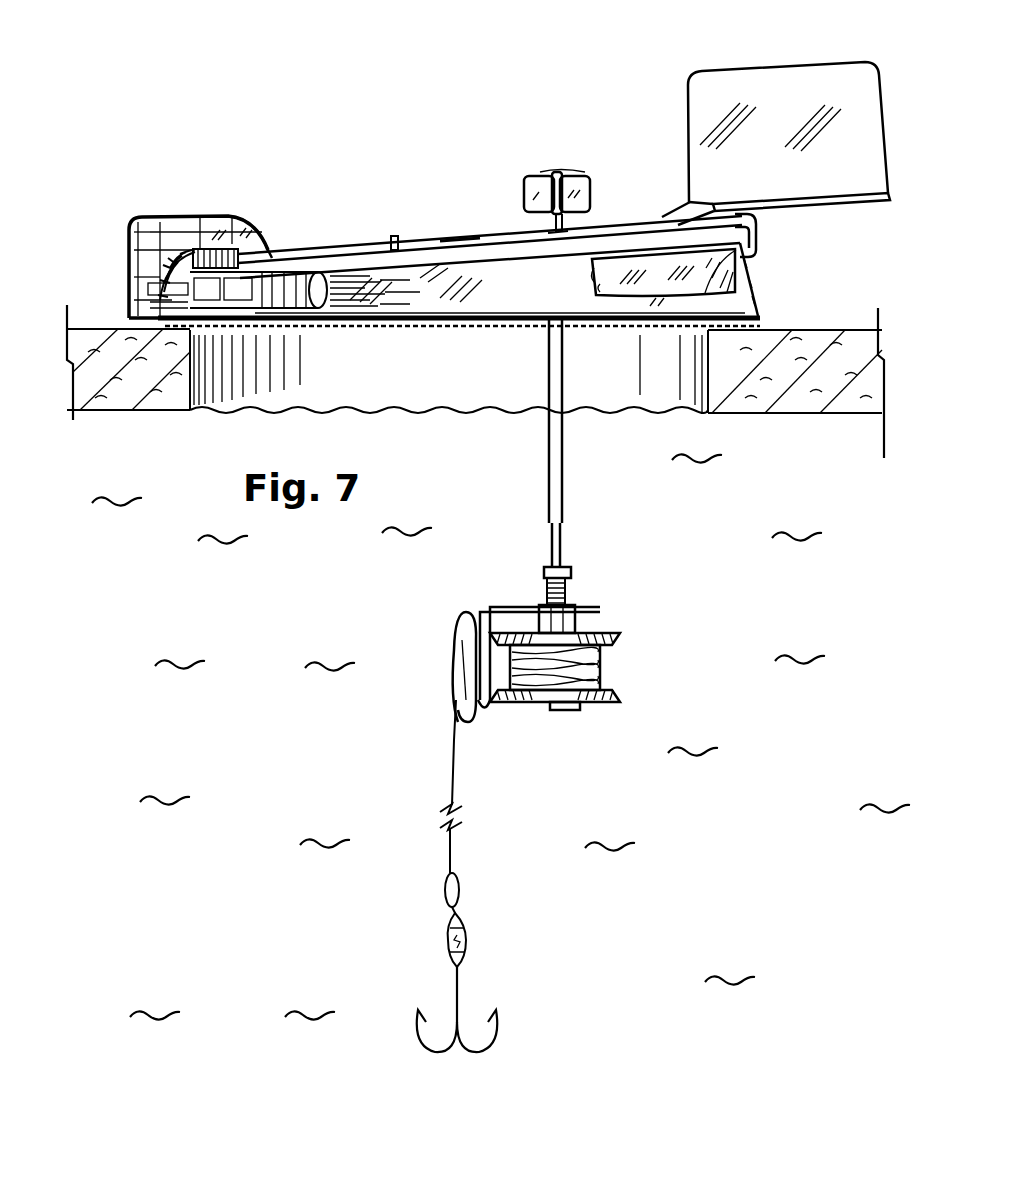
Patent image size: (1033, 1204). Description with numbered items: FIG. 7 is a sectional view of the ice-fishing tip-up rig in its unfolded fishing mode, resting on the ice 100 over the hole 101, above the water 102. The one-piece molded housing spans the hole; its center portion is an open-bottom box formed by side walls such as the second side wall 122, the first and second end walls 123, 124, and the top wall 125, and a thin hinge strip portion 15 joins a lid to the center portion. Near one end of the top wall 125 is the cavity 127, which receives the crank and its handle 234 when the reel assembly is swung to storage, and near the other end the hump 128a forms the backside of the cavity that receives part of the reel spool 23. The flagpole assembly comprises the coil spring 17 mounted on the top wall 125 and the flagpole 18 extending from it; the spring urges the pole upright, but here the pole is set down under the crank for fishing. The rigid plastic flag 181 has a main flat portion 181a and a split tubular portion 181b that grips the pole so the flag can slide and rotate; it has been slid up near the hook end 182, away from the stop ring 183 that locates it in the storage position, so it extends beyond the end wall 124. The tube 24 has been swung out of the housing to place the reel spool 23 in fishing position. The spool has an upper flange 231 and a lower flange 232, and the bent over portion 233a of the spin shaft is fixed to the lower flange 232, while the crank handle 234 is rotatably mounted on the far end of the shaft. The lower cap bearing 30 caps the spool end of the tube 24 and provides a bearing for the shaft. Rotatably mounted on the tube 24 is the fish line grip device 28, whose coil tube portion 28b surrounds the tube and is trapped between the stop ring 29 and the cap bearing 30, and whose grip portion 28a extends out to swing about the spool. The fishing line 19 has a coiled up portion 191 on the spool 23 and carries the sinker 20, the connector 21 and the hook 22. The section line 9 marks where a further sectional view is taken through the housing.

The section line 9- 9 is at (480, 133).
The hinge strip portion 15 is at (605, 540).
The coil spring 17 is at (150, 286).
The flagpole 18 is at (504, 237).
The fishing line 19 is at (450, 768).
The sinker 20 is at (460, 890).
The connector 21 is at (464, 942).
The hook 22 is at (460, 1000).
The reel spool 23 is at (640, 655).
The tube 24 is at (565, 494).
The fish line grip device 28 is at (500, 612).
The grip portion 28a is at (462, 659).
The coil tube portion 28b is at (567, 592).
The stop ring 29 is at (544, 572).
The lower cap bearing 30 is at (575, 622).
The deck 100 is at (828, 335).
The hole 101 is at (696, 402).
The deck opening 102 is at (298, 408).
The second side wall 122 is at (475, 303).
The first end wall 123 is at (130, 245).
The second end wall 124 is at (750, 302).
The top wall 125 is at (466, 238).
The cavity 127 is at (598, 292).
The hump 128a is at (224, 217).
The flag 181 is at (688, 132).
The main flat portion 181a is at (818, 85).
The split tubular portion 181b is at (665, 210).
The hook end 182 is at (757, 248).
The stop ring 183 is at (394, 236).
The coiled up portion 191 is at (605, 680).
The upper flange 231 is at (612, 635).
The lower flange 232 is at (612, 698).
The bent over portion 233a is at (568, 710).
The crank handle 234 is at (528, 185).